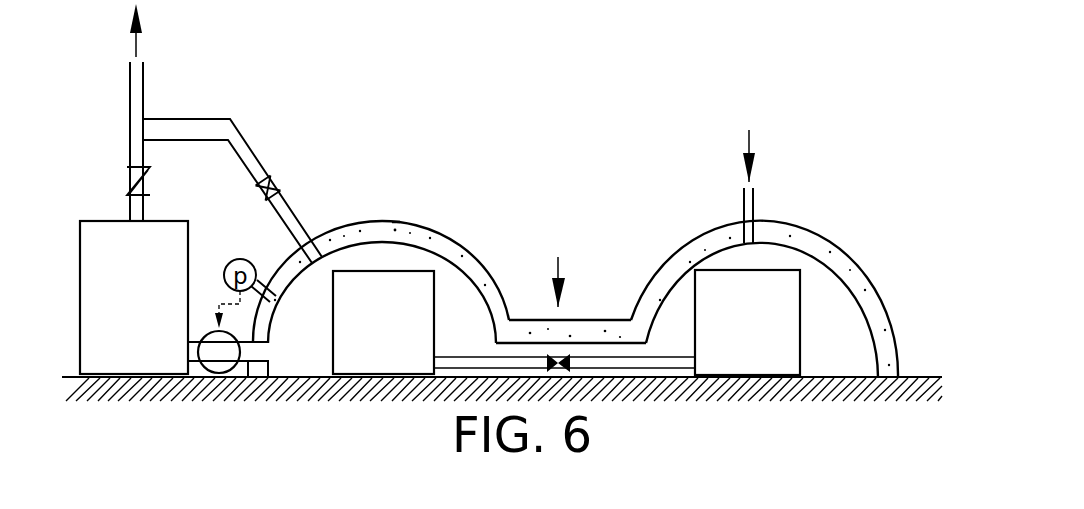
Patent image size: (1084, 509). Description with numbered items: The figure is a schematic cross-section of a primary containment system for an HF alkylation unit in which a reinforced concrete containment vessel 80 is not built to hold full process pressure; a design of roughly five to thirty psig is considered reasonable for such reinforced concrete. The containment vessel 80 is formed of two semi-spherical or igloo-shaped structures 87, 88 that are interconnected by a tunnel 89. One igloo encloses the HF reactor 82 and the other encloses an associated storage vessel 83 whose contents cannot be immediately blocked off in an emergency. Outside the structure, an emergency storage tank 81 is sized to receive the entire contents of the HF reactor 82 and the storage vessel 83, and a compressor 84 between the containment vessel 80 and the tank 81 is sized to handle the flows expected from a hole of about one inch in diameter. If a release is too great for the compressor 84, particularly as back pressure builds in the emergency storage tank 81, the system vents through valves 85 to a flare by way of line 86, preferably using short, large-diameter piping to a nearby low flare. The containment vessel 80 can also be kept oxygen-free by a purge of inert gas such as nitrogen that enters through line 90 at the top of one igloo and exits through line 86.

The reinforced concrete containment vessel 80 is at (463, 253).
The emergency storage tanks 81 is at (143, 276).
The HF reactor 82 is at (757, 334).
The associated storage vessels 83 is at (394, 329).
The compressor 84 is at (190, 353).
The valves 85 is at (127, 169).
The line to flare 86 is at (143, 82).
The semi-spherical structure 87 is at (392, 222).
The semi-spherical structure 88 is at (795, 227).
The tunnel 89 is at (597, 320).
The inert gas purge line 90 is at (753, 207).